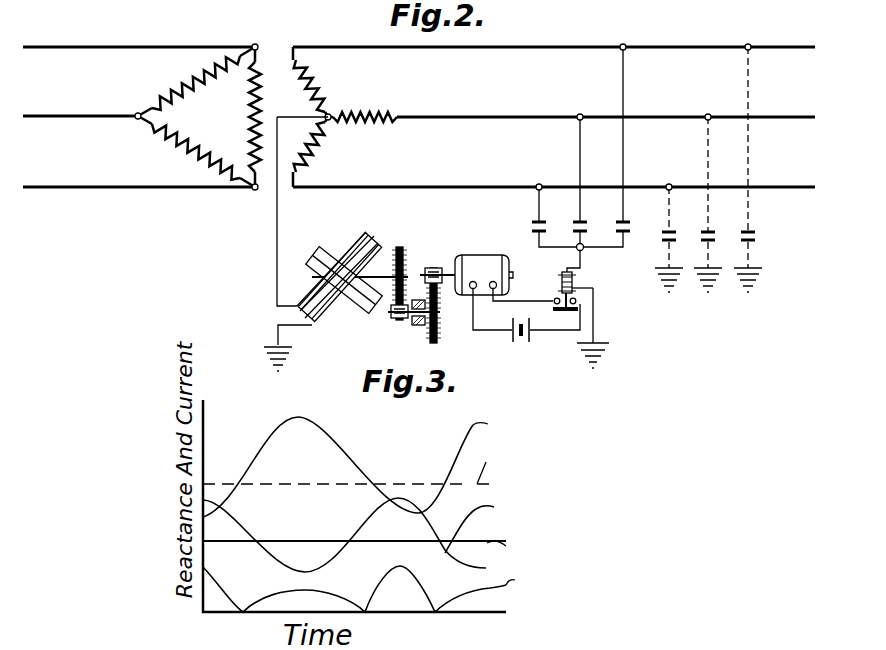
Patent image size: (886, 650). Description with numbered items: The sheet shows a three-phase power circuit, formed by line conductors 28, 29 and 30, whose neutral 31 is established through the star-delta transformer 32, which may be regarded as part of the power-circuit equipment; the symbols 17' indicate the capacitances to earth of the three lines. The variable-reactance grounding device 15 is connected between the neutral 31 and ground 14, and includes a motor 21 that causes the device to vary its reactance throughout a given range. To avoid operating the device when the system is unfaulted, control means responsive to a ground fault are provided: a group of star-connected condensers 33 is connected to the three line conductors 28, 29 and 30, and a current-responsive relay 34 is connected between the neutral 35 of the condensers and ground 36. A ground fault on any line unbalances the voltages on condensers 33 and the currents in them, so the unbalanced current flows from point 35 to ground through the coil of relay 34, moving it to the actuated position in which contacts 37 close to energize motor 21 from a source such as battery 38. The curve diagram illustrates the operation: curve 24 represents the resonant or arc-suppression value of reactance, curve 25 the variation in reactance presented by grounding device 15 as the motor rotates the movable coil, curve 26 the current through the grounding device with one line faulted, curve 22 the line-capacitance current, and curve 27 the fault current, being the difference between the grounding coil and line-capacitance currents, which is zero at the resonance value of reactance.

In FIG. 2, the ground 14 is at (276, 346).
In FIG. 2, the grounding device 15 is at (350, 342).
In FIG. 2, the capacitances to earth 17' is at (708, 168).
In FIG. 2, the motor 21 is at (482, 247).
In FIG. 3, the line-capacitance current curve 22 is at (448, 548).
In FIG. 3, the resonant reactance curve 24 is at (306, 485).
In FIG. 3, the grounding device reactance curve 25 is at (346, 462).
In FIG. 3, the grounding device current curve 26 is at (370, 527).
In FIG. 3, the fault current curve 27 is at (372, 586).
In FIG. 2, the line conductor 28 is at (476, 48).
In FIG. 2, the line conductor 29 is at (476, 119).
In FIG. 2, the line conductor 30 is at (460, 186).
In FIG. 2, the neutral 31 is at (331, 121).
In FIG. 2, the star-delta transformer 32 is at (292, 33).
In FIG. 2, the star-connected condensers 33 is at (571, 224).
In FIG. 2, the current-responsive relay 34 is at (551, 280).
In FIG. 2, the neutral of the star-connected condensers 35 is at (583, 250).
In FIG. 2, the ground 36 is at (596, 343).
In FIG. 2, the contacts 37 is at (572, 313).
In FIG. 2, the battery 38 is at (523, 343).